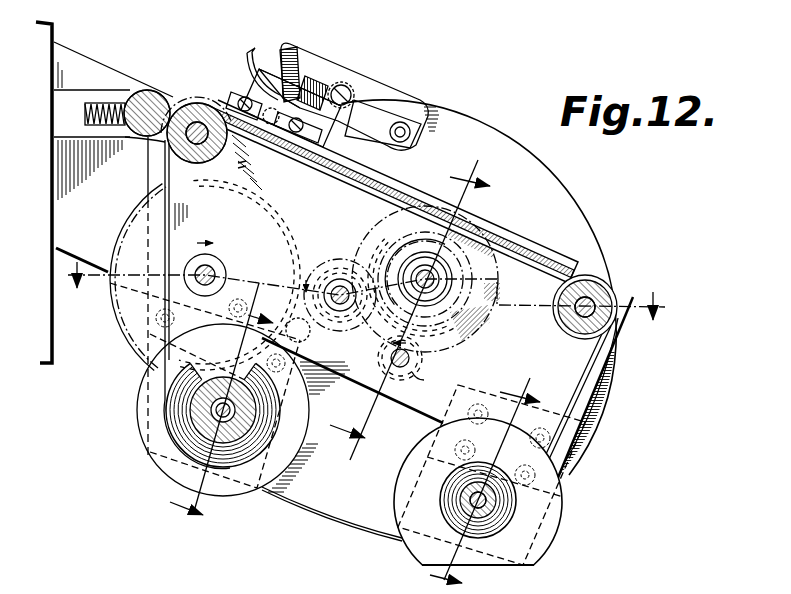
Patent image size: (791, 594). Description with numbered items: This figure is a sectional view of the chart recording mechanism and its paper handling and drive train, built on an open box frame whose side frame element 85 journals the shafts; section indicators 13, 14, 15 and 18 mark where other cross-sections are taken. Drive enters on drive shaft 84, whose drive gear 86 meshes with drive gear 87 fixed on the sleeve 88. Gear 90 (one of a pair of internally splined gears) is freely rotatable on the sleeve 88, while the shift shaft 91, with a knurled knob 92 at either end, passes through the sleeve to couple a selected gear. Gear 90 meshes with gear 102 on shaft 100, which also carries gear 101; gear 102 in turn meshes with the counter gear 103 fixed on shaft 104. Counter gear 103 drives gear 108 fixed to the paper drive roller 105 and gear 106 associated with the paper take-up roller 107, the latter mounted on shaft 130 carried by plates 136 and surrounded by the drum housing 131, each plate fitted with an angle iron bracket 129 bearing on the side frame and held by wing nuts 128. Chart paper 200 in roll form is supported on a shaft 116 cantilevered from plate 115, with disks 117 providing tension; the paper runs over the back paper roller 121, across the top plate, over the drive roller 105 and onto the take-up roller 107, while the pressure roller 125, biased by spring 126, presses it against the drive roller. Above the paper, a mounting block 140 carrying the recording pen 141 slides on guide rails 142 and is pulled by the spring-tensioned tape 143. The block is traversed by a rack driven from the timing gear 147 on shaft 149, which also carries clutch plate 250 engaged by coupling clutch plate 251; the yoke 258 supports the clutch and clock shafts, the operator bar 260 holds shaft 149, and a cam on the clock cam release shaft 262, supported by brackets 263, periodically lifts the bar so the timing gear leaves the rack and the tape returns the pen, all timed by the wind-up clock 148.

The spring 126 is at (108, 103).
The pressure roller 125 is at (138, 141).
The paper drive roller 105 is at (190, 118).
The guide rails 142 is at (236, 102).
The tape 143 is at (318, 157).
The recording pen 141 is at (250, 52).
The mounting block 140 is at (247, 96).
The timing gear 147 is at (290, 48).
The operator bar 260 is at (302, 45).
The shaft 149 is at (313, 70).
The clutch plate 250 is at (325, 80).
The coupling clutch plate 251 is at (349, 88).
The clock cam release shaft 262 is at (378, 116).
The yoke 258 is at (408, 95).
The brackets 263 is at (388, 138).
The clock 148 is at (490, 124).
The gear 108 is at (256, 162).
The counter gear 103 is at (283, 212).
The shaft 104 is at (212, 273).
The plates 136 is at (152, 362).
The gear 106 is at (215, 366).
The drum housing 131 is at (157, 460).
The shaft 130 is at (230, 472).
The paper take-up roller 107 is at (258, 413).
The angle iron bracket 129 is at (290, 395).
The shaft 100 is at (340, 280).
The gear 102 is at (324, 265).
The gear 101 is at (310, 334).
The gear 90 is at (407, 226).
The sleeve 88 is at (410, 243).
The drive gear 87 is at (463, 318).
The shift shaft 91 is at (449, 276).
The drive shaft 84 is at (388, 358).
The drive gear 86 is at (420, 362).
The back paper roller 121 is at (600, 292).
The side frame element 85 is at (610, 358).
The disks 117 is at (558, 512).
The plate 115 is at (408, 498).
The shaft 116 is at (455, 512).
The chart paper 200 is at (500, 542).
The wing nuts 128 is at (219, 589).
The knurled knob 92 is at (401, 589).
The section line 13 is at (380, 292).
The section line 14 is at (485, 481).
The section line 15 is at (221, 410).
The section line 18 is at (410, 313).